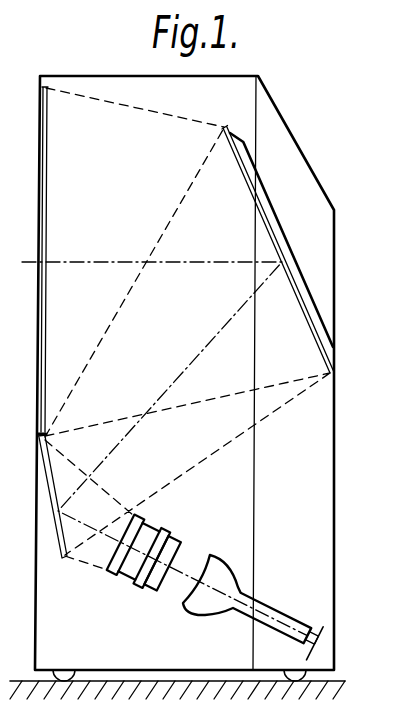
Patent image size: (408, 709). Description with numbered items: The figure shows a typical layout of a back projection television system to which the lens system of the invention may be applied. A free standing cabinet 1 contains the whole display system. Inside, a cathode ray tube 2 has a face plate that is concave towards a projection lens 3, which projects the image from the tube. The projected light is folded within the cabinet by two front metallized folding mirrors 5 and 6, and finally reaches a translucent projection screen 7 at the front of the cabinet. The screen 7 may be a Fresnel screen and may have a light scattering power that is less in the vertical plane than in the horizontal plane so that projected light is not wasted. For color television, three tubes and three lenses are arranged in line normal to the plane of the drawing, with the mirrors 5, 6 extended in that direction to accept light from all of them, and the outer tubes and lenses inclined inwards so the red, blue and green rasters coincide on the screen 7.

The cabinet 1 is at (336, 388).
The cathode ray tube 2 is at (285, 622).
The projection lens 3 is at (123, 572).
The folding mirror 5 is at (50, 490).
The folding mirror 6 is at (282, 240).
The projection screen 7 is at (43, 220).